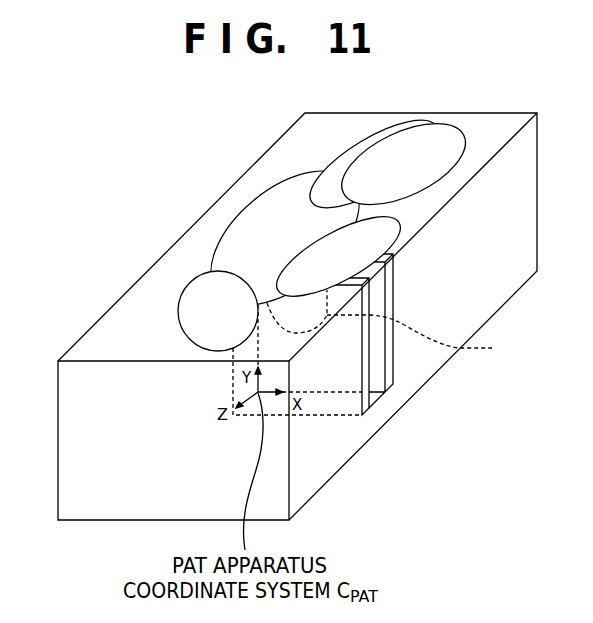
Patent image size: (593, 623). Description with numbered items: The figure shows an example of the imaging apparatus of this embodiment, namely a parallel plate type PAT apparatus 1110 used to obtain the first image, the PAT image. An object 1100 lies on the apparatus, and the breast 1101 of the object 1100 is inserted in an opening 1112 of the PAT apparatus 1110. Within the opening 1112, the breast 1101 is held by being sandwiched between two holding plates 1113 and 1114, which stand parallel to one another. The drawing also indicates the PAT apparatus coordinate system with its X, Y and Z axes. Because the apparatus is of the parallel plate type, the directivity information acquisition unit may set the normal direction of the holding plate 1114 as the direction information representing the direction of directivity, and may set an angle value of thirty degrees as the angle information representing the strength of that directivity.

The object 1100 is at (218, 243).
The breast 1101 is at (404, 325).
The PAT apparatus 1110 is at (117, 302).
The opening 1112 is at (380, 296).
The holding plate 1113 is at (393, 367).
The holding plate 1114 is at (372, 395).